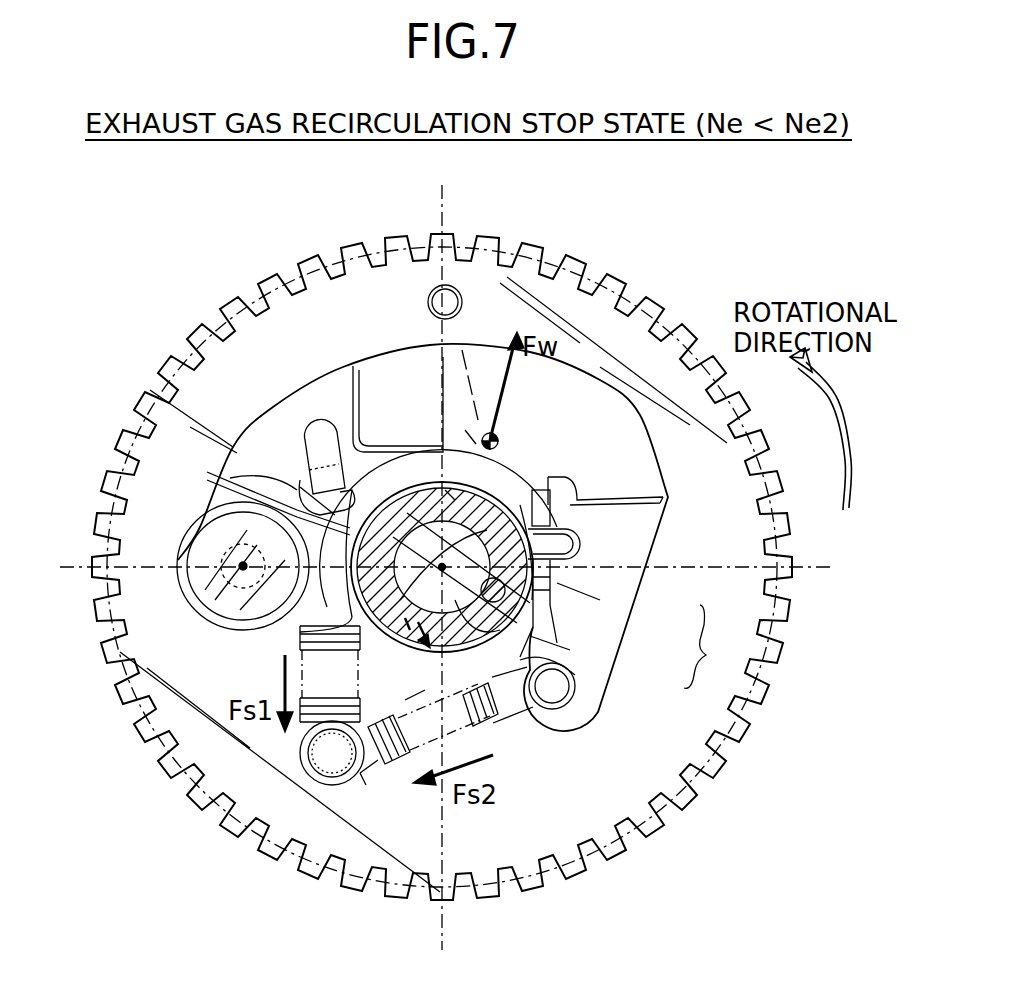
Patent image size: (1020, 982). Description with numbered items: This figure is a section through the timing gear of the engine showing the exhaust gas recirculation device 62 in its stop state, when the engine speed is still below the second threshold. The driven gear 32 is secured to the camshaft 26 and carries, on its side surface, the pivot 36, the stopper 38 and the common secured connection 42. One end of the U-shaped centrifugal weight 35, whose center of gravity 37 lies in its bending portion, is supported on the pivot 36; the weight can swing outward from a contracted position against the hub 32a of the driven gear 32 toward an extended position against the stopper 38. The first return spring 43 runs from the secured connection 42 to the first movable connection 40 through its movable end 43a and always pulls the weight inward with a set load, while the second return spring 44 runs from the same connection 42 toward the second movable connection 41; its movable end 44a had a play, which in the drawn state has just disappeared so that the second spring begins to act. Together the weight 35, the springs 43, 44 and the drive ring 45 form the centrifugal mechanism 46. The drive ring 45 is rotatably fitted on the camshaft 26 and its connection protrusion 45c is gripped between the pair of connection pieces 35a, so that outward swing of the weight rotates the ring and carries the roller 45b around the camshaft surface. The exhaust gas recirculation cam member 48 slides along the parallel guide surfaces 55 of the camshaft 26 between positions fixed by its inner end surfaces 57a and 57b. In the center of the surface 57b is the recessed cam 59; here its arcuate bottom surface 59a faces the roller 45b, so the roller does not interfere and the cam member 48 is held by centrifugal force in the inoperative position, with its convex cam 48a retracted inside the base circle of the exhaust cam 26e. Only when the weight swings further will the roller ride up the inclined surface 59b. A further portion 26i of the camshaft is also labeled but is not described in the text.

The driven gear 32 is at (400, 266).
The hub of the driven gear 32a is at (450, 487).
The centrifugal mechanism 46 is at (290, 380).
The stopper 38 is at (428, 302).
The centrifugal weight 35 is at (477, 363).
The connection pieces 35a is at (543, 493).
The center of gravity 37 is at (474, 385).
The camshaft 26 is at (332, 548).
The exhaust cam 26e is at (332, 420).
The stopper of camshaft 26i is at (566, 510).
The pivot 36 is at (212, 592).
The first movable connection 40 is at (317, 443).
The second movable connection 41 is at (552, 710).
The common secured connection 42 is at (318, 756).
The first return spring 43 is at (300, 635).
The movable end of the first return spring 43a is at (240, 480).
The second return spring 44 is at (393, 773).
The movable end of the second return spring 44a is at (596, 712).
The drive ring 45 is at (528, 482).
The roller 45b is at (558, 612).
The connection protrusion 45c is at (558, 540).
The exhaust gas recirculation cam member 48 is at (410, 632).
The convex cam 48a is at (547, 572).
The guide surfaces 55 is at (353, 613).
The inner end surface 57a is at (423, 510).
The inner end surface 57b is at (418, 628).
The recessed cam 59 is at (712, 646).
The arcuate bottom surface 59a is at (550, 635).
The inclined surface 59b is at (560, 583).
The exhaust gas recirculation device 62 is at (414, 668).